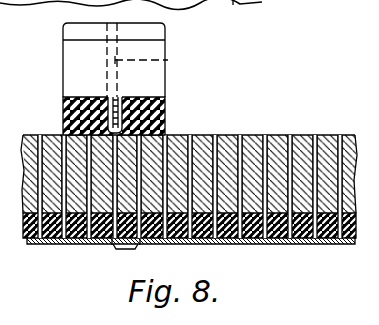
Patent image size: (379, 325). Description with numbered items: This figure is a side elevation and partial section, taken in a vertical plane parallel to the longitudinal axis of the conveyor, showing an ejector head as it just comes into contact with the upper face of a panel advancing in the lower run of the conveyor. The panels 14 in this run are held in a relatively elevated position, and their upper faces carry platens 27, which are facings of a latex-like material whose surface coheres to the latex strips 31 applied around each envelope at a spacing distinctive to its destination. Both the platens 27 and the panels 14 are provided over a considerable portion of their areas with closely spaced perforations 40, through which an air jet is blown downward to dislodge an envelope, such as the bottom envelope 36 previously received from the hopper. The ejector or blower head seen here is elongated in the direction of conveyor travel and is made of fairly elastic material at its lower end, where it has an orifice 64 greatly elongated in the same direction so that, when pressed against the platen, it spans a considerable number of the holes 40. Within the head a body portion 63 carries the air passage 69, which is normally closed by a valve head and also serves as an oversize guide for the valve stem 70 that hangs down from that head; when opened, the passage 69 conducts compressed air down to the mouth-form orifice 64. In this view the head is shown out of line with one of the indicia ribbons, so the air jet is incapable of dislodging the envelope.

The panels 14 is at (274, 140).
The perforations 40 is at (338, 136).
The bottom envelope 36 is at (290, 242).
The platens 27 is at (98, 246).
The latex strips 31 is at (122, 250).
The orifice 64 is at (123, 120).
The valve stem 70 is at (108, 120).
The upper block 63 is at (72, 67).
The air passage 69 is at (168, 59).